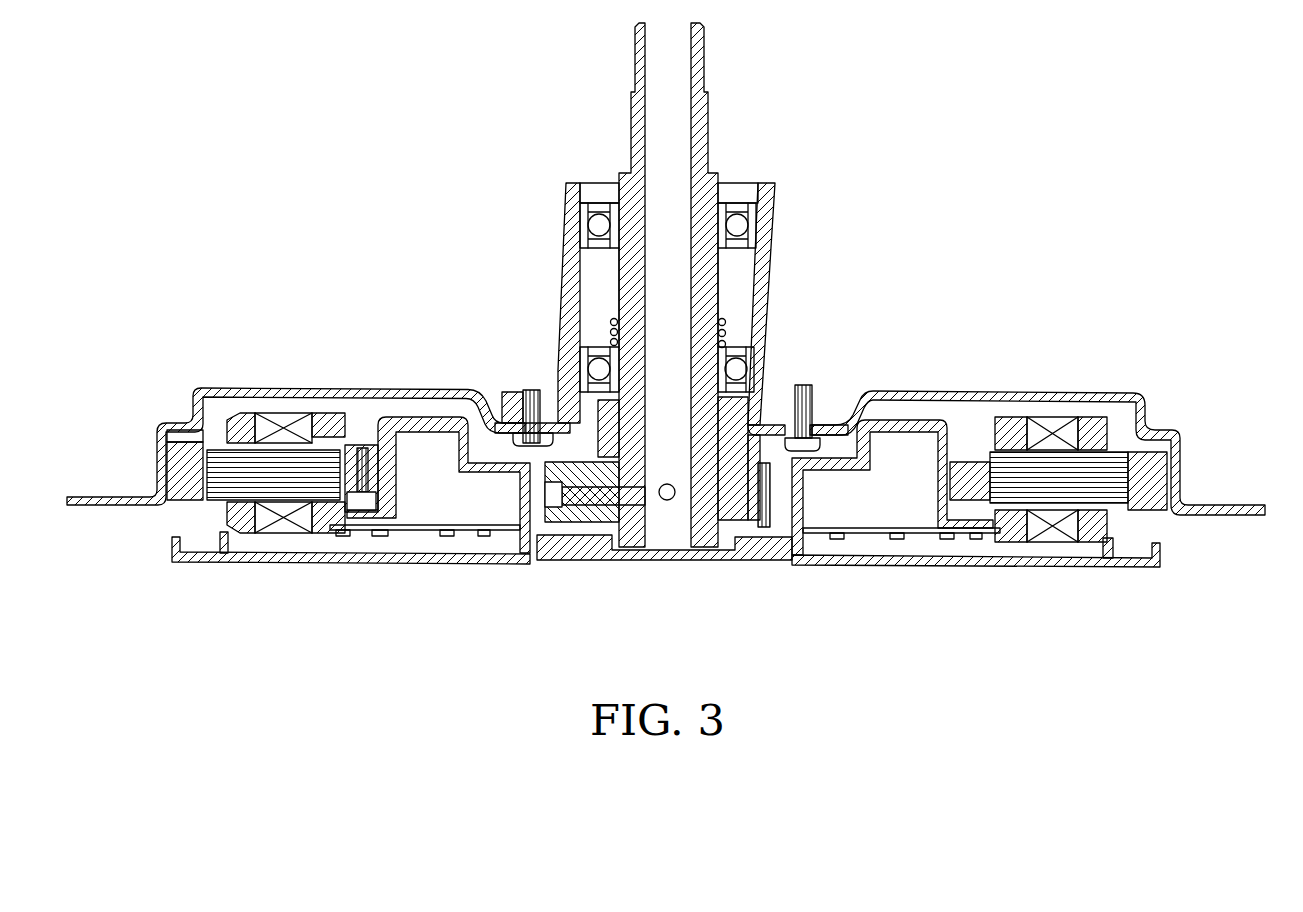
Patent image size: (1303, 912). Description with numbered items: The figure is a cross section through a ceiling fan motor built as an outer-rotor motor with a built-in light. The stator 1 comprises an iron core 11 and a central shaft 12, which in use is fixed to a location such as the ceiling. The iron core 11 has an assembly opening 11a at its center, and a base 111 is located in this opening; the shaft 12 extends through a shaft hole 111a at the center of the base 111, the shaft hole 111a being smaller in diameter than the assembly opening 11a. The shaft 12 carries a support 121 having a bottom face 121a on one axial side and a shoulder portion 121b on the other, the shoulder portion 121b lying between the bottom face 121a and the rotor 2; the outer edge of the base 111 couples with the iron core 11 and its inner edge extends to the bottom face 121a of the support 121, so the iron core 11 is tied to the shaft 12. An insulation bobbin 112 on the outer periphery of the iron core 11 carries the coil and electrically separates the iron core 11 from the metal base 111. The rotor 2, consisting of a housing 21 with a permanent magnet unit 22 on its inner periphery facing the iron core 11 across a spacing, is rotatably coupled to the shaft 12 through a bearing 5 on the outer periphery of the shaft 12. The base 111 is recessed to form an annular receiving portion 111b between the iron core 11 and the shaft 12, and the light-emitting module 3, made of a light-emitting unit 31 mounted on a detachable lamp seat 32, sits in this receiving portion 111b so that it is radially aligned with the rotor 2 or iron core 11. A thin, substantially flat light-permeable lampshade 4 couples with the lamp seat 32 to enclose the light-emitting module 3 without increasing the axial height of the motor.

The stator 1 is at (953, 265).
The iron core 11 is at (1053, 475).
The base 111 is at (436, 420).
The shaft hole 111a is at (710, 547).
The receiving portion 111b is at (877, 511).
The insulation bobbin 112 is at (318, 440).
The assembly opening 11a is at (832, 446).
The shaft 12 is at (720, 271).
The support 121 is at (730, 513).
The bottom face 121a is at (745, 520).
The shoulder portion 121b is at (742, 457).
The rotor 2 is at (258, 363).
The housing 21 is at (357, 400).
The permanent magnet unit 22 is at (178, 463).
The light-emitting module 3 is at (665, 570).
The light-emitting unit 31 is at (468, 531).
The lamp seat 32 is at (397, 483).
The lampshade 4 is at (332, 553).
The bearing 5 is at (762, 186).